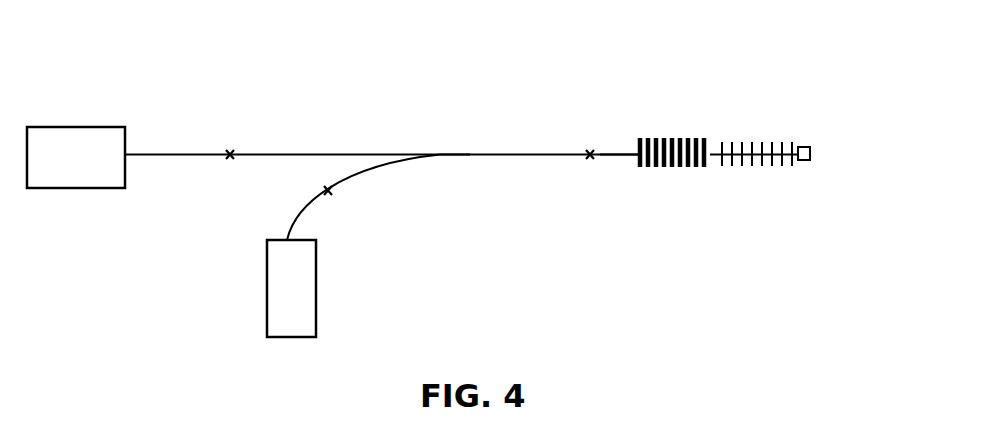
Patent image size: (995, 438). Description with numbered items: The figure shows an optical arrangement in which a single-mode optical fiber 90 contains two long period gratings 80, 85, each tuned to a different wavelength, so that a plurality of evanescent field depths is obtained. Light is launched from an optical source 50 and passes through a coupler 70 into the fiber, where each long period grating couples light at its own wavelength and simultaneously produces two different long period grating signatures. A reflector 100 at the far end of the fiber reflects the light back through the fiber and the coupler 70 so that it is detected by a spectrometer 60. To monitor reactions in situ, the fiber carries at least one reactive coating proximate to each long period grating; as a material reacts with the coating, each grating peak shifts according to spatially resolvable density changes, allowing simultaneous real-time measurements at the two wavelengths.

The optical source 50 is at (75, 127).
The spectrometer 60 is at (262, 293).
The coupler 70 is at (468, 150).
The long period grating 80 is at (751, 206).
The long period grating 85 is at (666, 198).
The single-mode optical fiber 90 is at (614, 118).
The reflector 100 is at (810, 151).